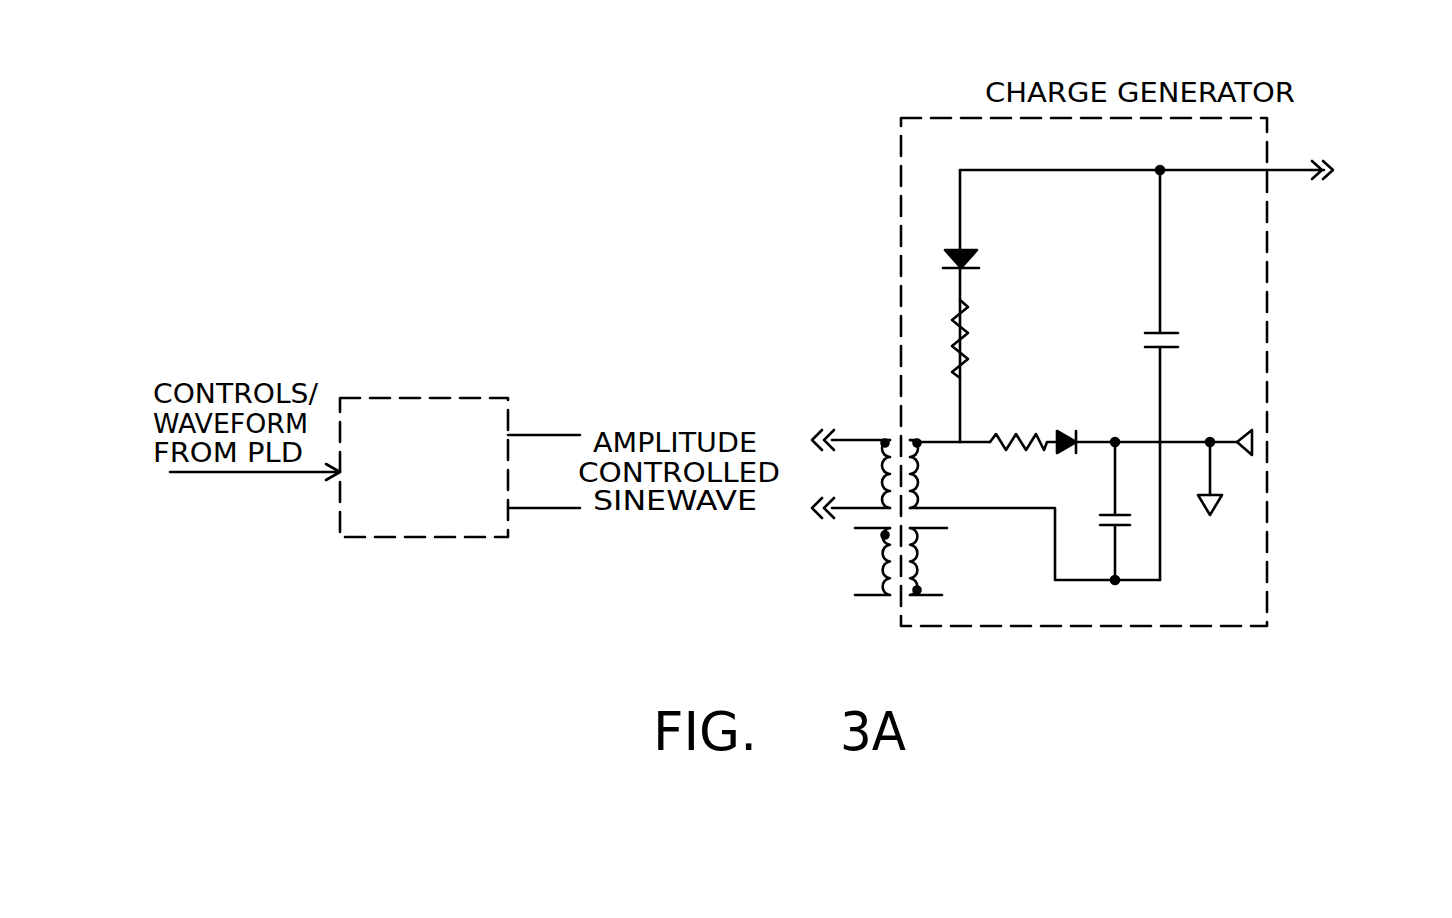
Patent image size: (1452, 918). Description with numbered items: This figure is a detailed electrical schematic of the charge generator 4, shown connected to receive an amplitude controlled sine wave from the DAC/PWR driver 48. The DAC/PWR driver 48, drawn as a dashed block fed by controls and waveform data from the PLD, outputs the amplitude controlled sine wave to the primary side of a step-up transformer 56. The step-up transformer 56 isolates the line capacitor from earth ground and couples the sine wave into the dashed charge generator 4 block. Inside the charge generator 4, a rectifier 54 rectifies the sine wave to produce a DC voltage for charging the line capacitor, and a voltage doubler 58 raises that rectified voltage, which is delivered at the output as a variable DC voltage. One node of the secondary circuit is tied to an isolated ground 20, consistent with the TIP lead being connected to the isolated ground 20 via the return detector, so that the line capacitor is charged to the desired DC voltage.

The voltage doubler 58 is at (988, 158).
The charge generator 4 is at (1270, 151).
The rectifier 54 is at (1075, 404).
The isolated ground 20 is at (1216, 506).
The DAC/PWR driver 48 is at (442, 398).
The step-up transformer 56 is at (833, 540).